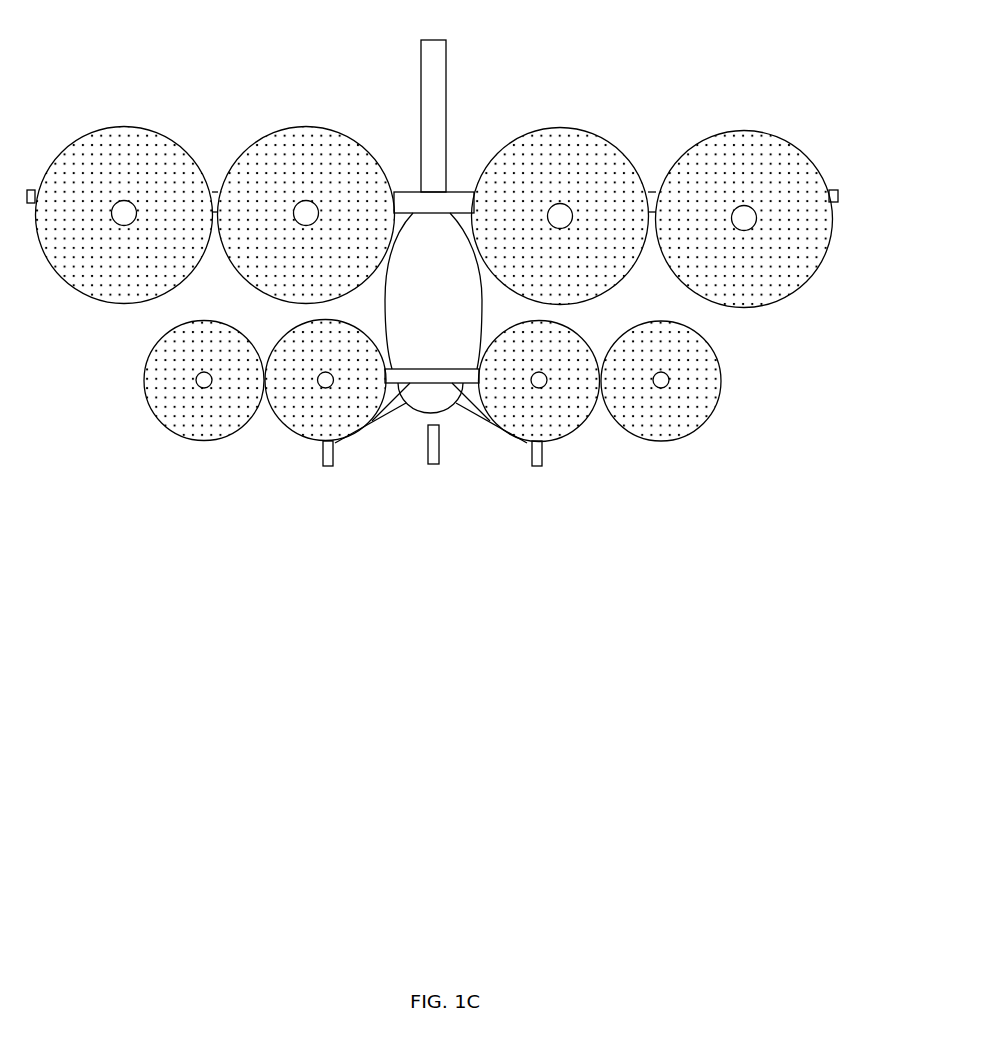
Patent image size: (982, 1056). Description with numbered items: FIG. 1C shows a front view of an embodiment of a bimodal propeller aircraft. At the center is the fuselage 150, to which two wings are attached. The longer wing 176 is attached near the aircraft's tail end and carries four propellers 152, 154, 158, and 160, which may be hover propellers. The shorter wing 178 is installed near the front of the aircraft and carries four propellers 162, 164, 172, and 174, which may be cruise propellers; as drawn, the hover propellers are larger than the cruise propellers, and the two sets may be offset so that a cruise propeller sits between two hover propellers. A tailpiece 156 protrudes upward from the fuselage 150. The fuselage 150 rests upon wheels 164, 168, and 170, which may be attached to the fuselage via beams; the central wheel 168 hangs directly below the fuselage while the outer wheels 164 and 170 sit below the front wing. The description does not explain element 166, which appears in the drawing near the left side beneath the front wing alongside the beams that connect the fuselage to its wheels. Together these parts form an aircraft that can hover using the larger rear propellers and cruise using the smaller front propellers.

The fuselage 150 is at (450, 412).
The propeller 152 is at (108, 127).
The propeller 154 is at (292, 127).
The tailpiece 156 is at (421, 66).
The propeller 158 is at (548, 130).
The propeller 160 is at (737, 132).
The propeller 162 is at (212, 440).
The propeller 164 is at (333, 467).
The small wheel 166 is at (370, 425).
The wheel 168 is at (433, 465).
The wheel 170 is at (542, 467).
The propeller 172 is at (585, 428).
The propeller 174 is at (670, 442).
The wing 176 is at (420, 190).
The wing 178 is at (421, 368).